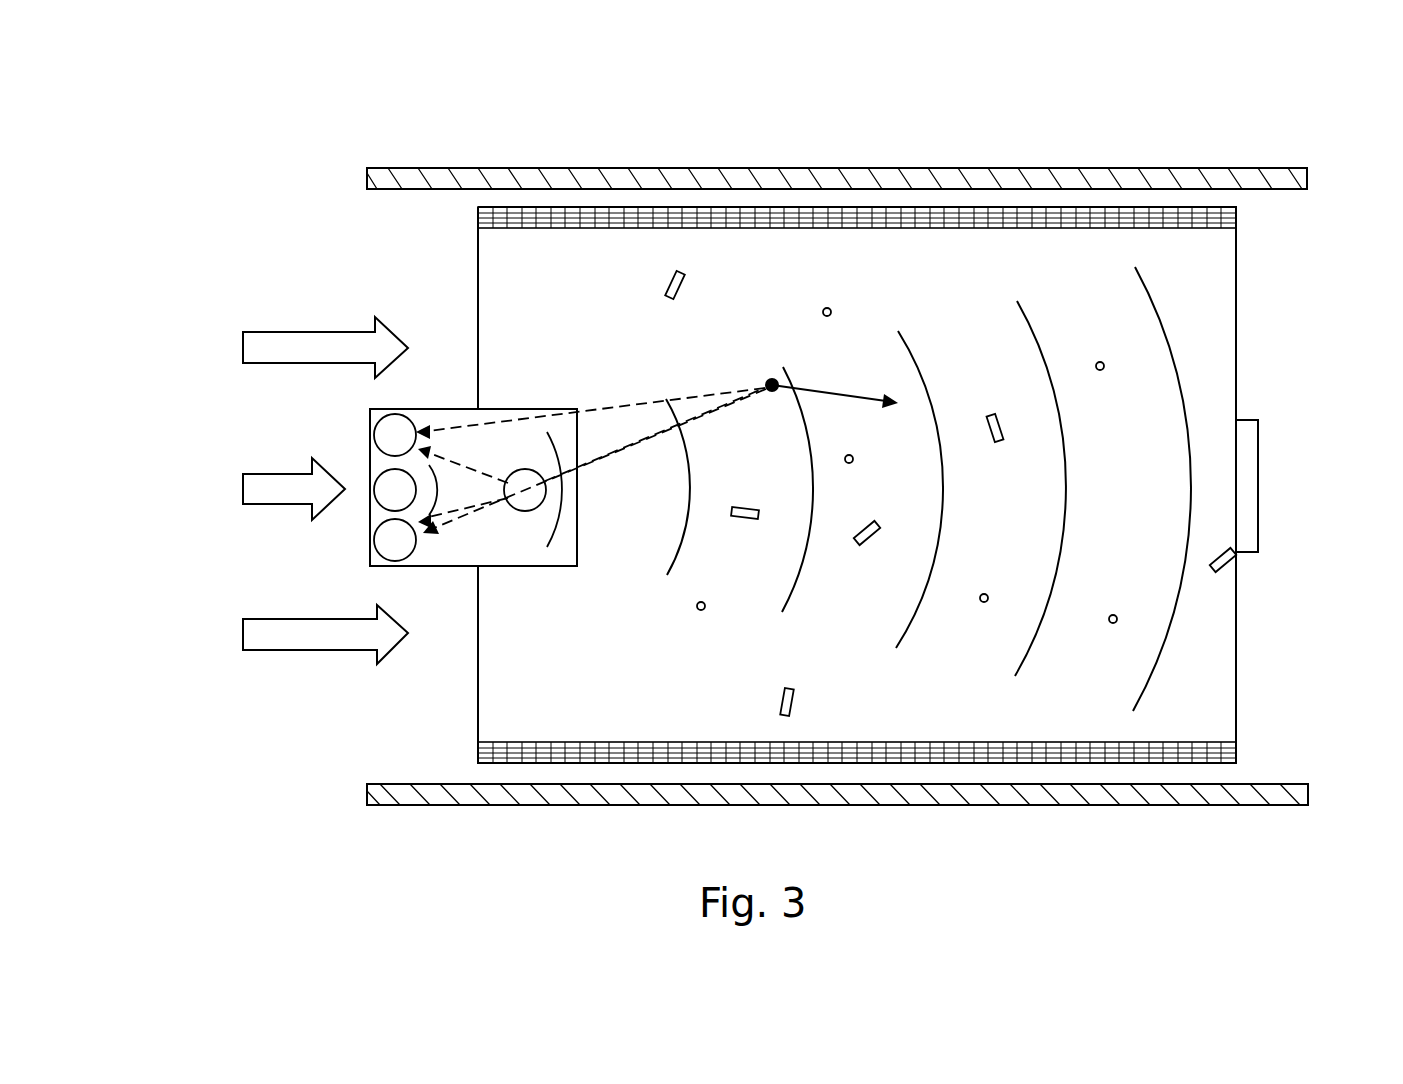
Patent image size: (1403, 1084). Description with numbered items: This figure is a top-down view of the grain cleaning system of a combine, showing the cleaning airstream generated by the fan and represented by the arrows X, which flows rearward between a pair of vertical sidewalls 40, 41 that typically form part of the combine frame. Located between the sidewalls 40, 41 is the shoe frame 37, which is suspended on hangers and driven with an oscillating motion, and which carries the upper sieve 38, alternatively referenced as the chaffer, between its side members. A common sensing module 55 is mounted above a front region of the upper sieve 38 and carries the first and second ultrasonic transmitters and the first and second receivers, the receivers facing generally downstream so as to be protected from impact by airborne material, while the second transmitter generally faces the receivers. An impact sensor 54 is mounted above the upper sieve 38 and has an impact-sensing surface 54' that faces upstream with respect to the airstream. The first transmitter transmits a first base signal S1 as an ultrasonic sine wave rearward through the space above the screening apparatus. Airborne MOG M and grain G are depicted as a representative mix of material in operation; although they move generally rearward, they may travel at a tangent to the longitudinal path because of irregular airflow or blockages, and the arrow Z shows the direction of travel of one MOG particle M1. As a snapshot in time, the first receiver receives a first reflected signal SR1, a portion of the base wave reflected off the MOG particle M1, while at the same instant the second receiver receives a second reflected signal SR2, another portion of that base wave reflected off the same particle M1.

The shoe frame 37 is at (1237, 750).
The upper sieve 38 is at (917, 485).
The vertical sidewall 40 is at (1253, 186).
The vertical sidewall 41 is at (1263, 806).
The impact sensor 54 is at (1300, 465).
The impact-sensing surface 54' is at (1204, 426).
The sensing module 55 is at (449, 409).
The MOG particle M1 is at (772, 378).
The airborne MOG M is at (873, 538).
The grain G is at (1100, 362).
The first base signal S1 is at (912, 350).
The first reflected signal SR1 is at (628, 404).
The second reflected signal SR2 is at (638, 444).
The direction of travel arrow Z is at (835, 386).
The cleaning airstream arrows X is at (310, 490).